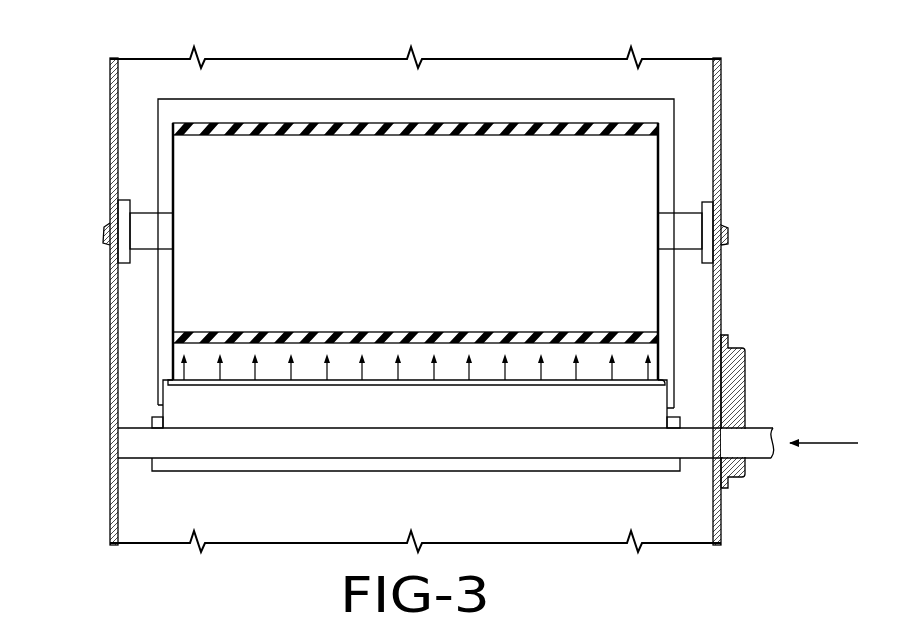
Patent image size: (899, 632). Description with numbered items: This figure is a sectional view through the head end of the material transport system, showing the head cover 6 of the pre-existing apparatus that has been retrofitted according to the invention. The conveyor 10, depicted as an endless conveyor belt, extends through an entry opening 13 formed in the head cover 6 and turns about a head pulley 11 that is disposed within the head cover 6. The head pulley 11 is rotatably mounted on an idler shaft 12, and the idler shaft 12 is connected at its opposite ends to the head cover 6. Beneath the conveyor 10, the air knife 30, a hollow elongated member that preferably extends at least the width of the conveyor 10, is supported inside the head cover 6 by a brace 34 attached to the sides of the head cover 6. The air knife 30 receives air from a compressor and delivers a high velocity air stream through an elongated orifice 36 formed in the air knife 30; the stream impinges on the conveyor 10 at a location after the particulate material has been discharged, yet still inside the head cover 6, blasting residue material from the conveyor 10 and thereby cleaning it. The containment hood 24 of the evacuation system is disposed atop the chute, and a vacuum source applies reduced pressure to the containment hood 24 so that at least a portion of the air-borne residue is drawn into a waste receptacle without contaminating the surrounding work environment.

The head cover 6 is at (92, 166).
The conveyor 10 is at (273, 128).
The head pulley 11 is at (348, 150).
The idler shaft 12 is at (150, 242).
The entry opening 13 is at (478, 98).
The containment hood 24 is at (110, 97).
The air knife 30 is at (308, 428).
The brace 34 is at (253, 448).
The elongated orifice 36 is at (205, 384).